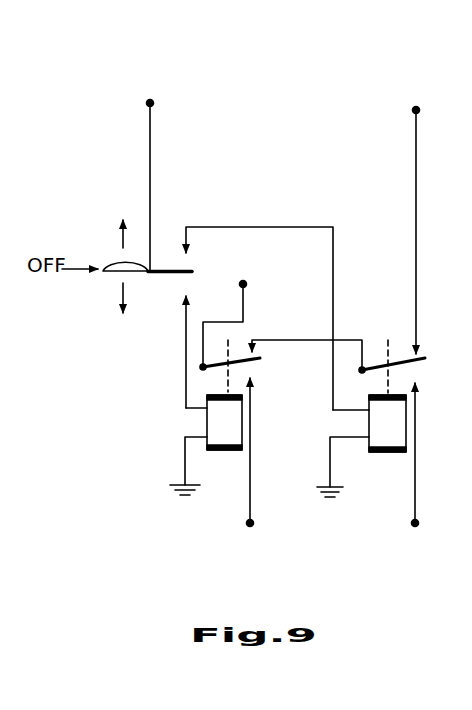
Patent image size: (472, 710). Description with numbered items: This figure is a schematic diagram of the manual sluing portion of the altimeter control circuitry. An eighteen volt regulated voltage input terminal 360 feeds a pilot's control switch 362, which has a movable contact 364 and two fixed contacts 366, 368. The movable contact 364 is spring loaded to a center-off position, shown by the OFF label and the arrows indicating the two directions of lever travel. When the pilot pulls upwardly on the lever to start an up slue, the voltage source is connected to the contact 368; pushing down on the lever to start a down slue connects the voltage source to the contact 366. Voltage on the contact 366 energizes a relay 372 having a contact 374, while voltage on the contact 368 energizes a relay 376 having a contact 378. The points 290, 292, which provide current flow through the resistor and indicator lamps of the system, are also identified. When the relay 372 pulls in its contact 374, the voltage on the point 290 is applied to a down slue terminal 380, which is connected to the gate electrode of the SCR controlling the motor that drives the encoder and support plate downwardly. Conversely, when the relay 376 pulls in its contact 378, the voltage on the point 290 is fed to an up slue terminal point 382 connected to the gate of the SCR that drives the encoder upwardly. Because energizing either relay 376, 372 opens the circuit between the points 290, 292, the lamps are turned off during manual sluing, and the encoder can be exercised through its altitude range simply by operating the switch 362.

The regulated voltage input terminal 360 is at (153, 101).
The pilot's control switch 362 is at (100, 247).
The movable contact 364 is at (192, 274).
The fixed contact 366 is at (190, 251).
The fixed contact 368 is at (184, 299).
The point 290 is at (247, 281).
The point 292 is at (430, 100).
The relay 372 is at (362, 422).
The contact 374 is at (425, 359).
The relay 376 is at (192, 421).
The contact 378 is at (256, 364).
The down slue terminal 380 is at (417, 527).
The up slue terminal point 382 is at (252, 527).